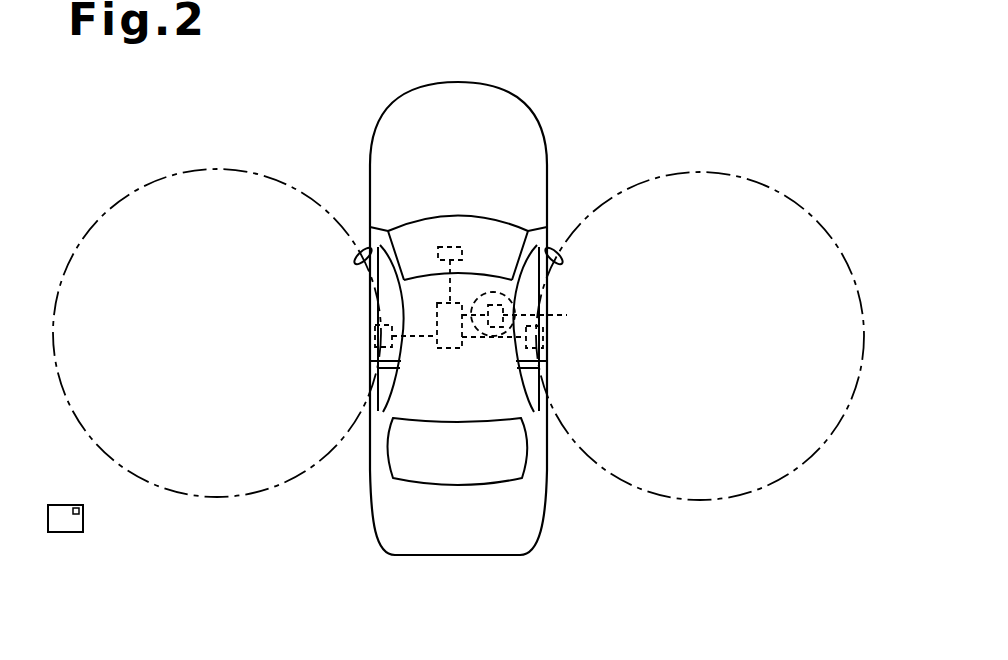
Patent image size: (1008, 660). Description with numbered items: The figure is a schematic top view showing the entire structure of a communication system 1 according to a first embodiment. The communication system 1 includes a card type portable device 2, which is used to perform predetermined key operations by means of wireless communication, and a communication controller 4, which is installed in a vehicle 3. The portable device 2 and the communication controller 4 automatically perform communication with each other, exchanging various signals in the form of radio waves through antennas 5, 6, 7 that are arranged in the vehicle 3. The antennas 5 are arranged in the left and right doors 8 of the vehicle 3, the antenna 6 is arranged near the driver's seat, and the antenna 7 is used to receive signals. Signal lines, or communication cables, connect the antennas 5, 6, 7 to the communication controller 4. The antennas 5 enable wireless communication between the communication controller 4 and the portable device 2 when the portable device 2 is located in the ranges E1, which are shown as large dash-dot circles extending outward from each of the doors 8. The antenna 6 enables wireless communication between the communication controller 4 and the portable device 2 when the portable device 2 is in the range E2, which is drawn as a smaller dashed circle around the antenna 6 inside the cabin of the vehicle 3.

The communication system 1 is at (631, 116).
The card type portable device 2 is at (63, 532).
The vehicle 3 is at (440, 556).
The communication controller 4 is at (450, 348).
The antennas 5 is at (375, 335).
The antenna 6 is at (524, 314).
The antenna 7 is at (438, 252).
The doors 8 is at (370, 283).
The ranges E1 is at (236, 498).
The range E2 is at (495, 337).